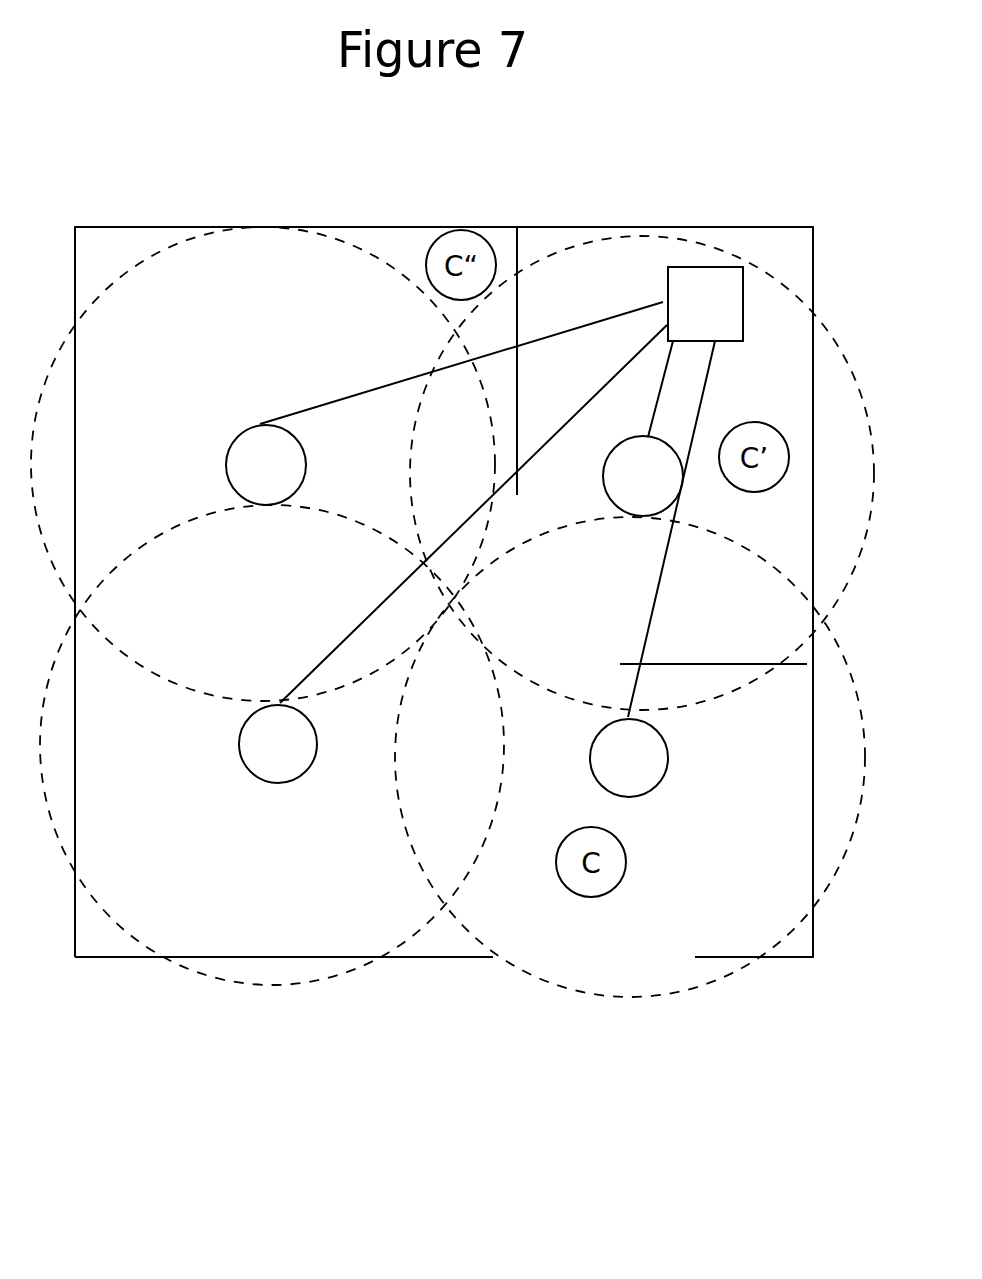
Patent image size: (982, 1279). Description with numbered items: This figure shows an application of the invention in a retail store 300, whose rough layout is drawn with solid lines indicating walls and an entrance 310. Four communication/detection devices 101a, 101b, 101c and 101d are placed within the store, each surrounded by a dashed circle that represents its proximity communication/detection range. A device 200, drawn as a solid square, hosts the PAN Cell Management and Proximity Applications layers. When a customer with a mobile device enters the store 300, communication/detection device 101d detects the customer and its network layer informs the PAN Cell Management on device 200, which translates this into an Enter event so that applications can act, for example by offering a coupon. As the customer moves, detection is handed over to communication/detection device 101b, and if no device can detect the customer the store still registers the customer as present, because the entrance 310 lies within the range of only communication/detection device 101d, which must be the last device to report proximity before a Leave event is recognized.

The retail store 300 is at (132, 259).
The device 200 is at (683, 319).
The communication/detection device 101a is at (302, 481).
The communication/detection device 101b is at (675, 492).
The communication/detection device 101c is at (311, 760).
The communication/detection device 101d is at (662, 774).
The entrance 310 is at (670, 950).